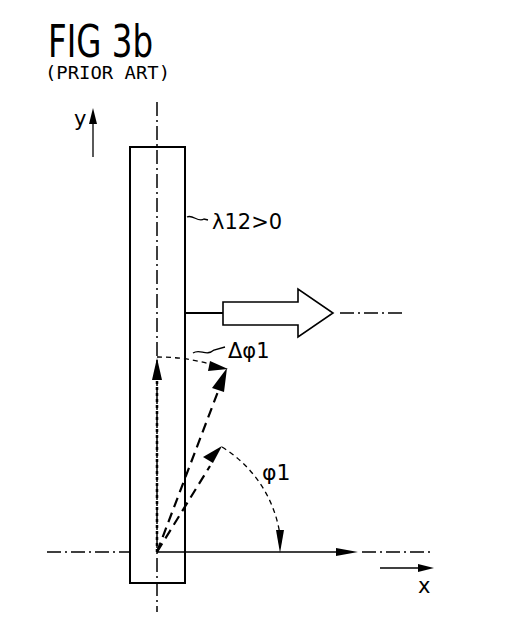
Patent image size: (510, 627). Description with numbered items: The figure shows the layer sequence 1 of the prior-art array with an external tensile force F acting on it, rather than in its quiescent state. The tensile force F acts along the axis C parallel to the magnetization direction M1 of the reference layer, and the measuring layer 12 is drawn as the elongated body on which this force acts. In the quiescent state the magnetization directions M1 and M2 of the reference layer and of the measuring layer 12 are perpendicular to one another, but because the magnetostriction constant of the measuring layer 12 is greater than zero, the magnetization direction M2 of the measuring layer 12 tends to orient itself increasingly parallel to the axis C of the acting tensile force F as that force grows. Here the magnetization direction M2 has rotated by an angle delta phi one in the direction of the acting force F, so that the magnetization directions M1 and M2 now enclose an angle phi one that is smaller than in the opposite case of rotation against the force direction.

The layer sequence 1 is at (130, 191).
The measuring layer 12 is at (177, 164).
The axis of the body A is at (158, 118).
The axis of the acting tensile force C is at (387, 313).
The external tensile force F is at (274, 268).
The magnetization direction of the reference layer M1 is at (337, 493).
The magnetization direction of the measuring layer M2 is at (276, 402).